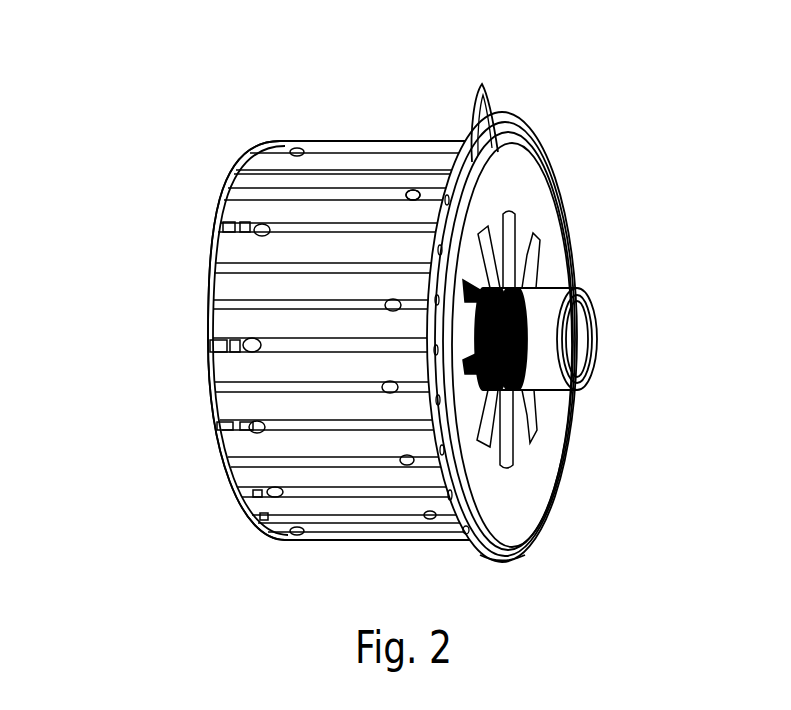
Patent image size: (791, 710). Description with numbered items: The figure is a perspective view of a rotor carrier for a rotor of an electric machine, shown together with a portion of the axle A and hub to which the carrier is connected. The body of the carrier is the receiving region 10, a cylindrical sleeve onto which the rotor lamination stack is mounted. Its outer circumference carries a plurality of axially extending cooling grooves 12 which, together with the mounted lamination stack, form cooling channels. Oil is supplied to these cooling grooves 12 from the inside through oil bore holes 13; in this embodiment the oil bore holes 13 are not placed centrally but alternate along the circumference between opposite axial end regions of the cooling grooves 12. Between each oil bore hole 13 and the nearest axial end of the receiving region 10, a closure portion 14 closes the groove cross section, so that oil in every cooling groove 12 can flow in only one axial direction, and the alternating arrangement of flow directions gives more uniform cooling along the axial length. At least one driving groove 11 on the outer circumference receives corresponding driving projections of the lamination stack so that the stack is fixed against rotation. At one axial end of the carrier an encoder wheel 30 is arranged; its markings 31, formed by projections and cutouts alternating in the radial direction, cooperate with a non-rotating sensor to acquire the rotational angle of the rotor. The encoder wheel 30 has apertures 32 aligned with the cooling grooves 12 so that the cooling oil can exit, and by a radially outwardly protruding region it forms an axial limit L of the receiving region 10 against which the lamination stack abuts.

The receiving region 10 is at (335, 562).
The driving groove 11 is at (206, 266).
The cooling grooves 12 is at (206, 302).
The oil bore holes 13 is at (391, 294).
The closure portion 14 is at (385, 388).
The encoder wheel 30 is at (527, 199).
The markings 31 is at (528, 447).
The apertures 32 is at (484, 101).
The axle A is at (604, 338).
The axial limit L is at (513, 571).